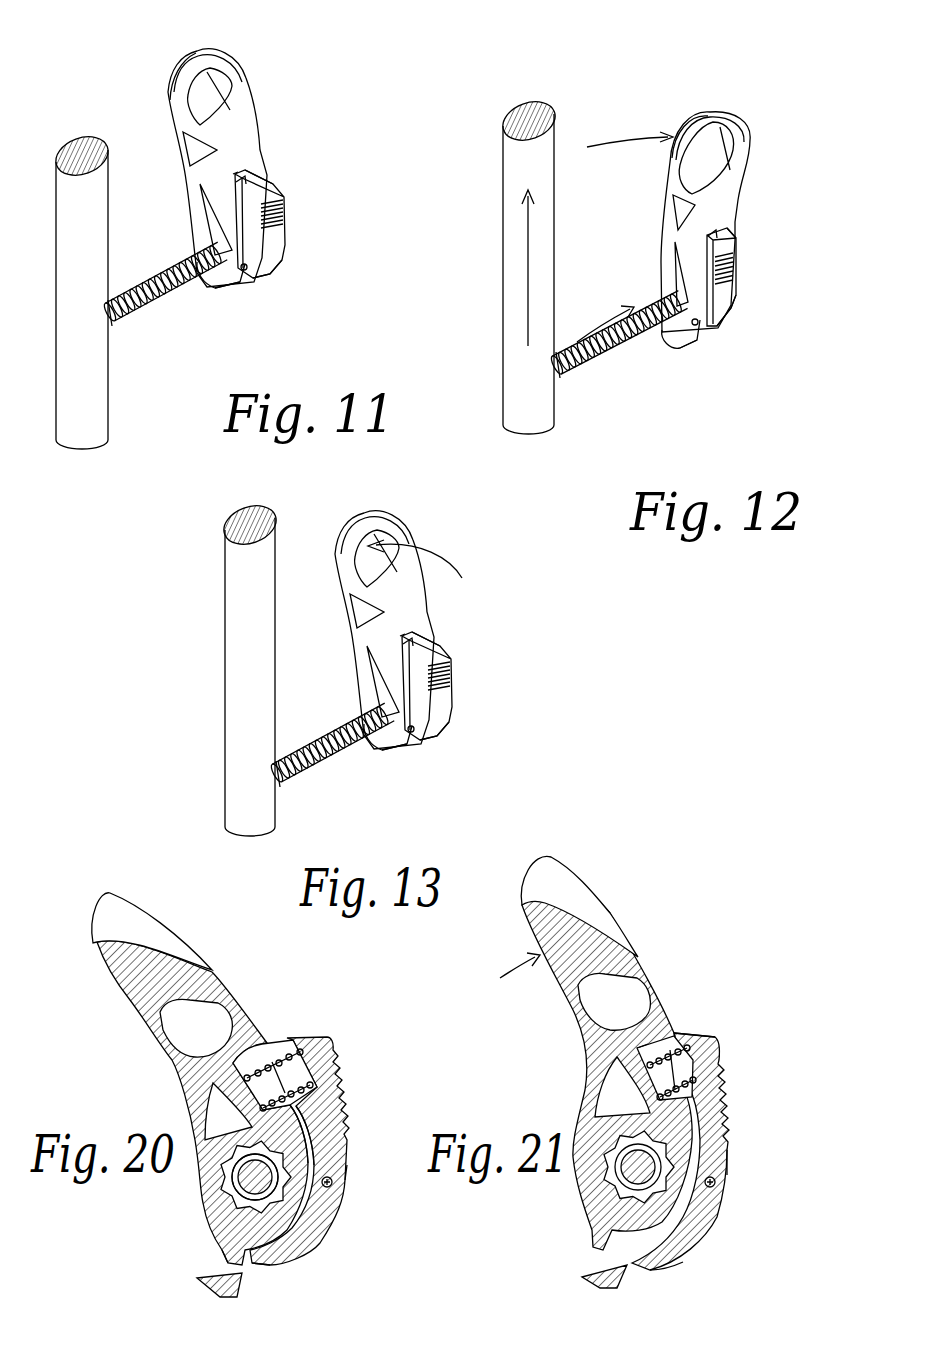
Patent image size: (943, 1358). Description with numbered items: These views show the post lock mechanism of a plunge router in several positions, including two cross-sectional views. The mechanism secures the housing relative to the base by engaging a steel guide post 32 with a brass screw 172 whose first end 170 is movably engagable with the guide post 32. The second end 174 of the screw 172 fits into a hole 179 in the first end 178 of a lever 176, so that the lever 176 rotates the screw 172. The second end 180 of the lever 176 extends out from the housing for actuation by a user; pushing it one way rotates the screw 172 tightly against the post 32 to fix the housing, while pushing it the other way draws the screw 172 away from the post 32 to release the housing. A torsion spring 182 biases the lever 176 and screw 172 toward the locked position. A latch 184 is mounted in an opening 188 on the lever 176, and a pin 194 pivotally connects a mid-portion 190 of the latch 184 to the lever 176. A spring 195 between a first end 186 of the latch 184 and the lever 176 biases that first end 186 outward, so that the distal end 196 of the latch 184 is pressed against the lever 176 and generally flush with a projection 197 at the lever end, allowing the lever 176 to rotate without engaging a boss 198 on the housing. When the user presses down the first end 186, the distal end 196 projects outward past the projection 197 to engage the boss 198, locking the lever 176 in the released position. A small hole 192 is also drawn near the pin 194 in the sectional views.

In FIG. 11, the guide post 32 is at (89, 142).
In FIG. 12, the guide post 32 is at (530, 114).
In FIG. 13, the guide post 32 is at (256, 520).
In FIG. 11, the first end of screw 170 is at (116, 325).
In FIG. 12, the first end of screw 170 is at (572, 380).
In FIG. 13, the first end of screw 170 is at (284, 790).
In FIG. 11, the screw 172 is at (160, 272).
In FIG. 12, the screw 172 is at (645, 300).
In FIG. 13, the screw 172 is at (328, 736).
In FIG. 20, the screw 172 is at (318, 1220).
In FIG. 11, the second end of screw 174 is at (228, 278).
In FIG. 12, the second end of screw 174 is at (688, 345).
In FIG. 13, the second end of screw 174 is at (395, 741).
In FIG. 20, the second end of screw 174 is at (312, 1192).
In FIG. 11, the lever 176 is at (240, 132).
In FIG. 12, the lever 176 is at (735, 170).
In FIG. 13, the lever 176 is at (405, 596).
In FIG. 20, the lever 176 is at (214, 983).
In FIG. 21, the lever 176 is at (607, 1054).
In FIG. 11, the first end of lever 178 is at (214, 288).
In FIG. 12, the first end of lever 178 is at (675, 348).
In FIG. 13, the first end of lever 178 is at (381, 750).
In FIG. 20, the hole 179 is at (232, 1206).
In FIG. 11, the second end of lever 180 is at (187, 56).
In FIG. 12, the second end of lever 180 is at (703, 112).
In FIG. 20, the second end of lever 180 is at (130, 906).
In FIG. 21, the second end of lever 180 is at (563, 880).
In FIG. 20, the torsion spring 182 is at (248, 1181).
In FIG. 21, the torsion spring 182 is at (639, 1167).
In FIG. 11, the latch 184 is at (287, 205).
In FIG. 12, the latch 184 is at (738, 250).
In FIG. 13, the latch 184 is at (454, 666).
In FIG. 20, the latch 184 is at (340, 1043).
In FIG. 21, the latch 184 is at (724, 1058).
In FIG. 11, the first end of latch 186 is at (280, 190).
In FIG. 12, the first end of latch 186 is at (737, 237).
In FIG. 13, the first end of latch 186 is at (448, 650).
In FIG. 21, the first end of latch 186 is at (707, 1035).
In FIG. 11, the opening 188 is at (250, 180).
In FIG. 12, the opening 188 is at (728, 232).
In FIG. 13, the opening 188 is at (418, 640).
In FIG. 21, the opening 188 is at (660, 1040).
In FIG. 11, the mid-portion of latch 190 is at (276, 275).
In FIG. 12, the mid-portion of latch 190 is at (735, 322).
In FIG. 13, the mid-portion of latch 190 is at (443, 738).
In FIG. 21, the mid-portion of latch 190 is at (652, 1270).
In FIG. 20, the pin hole 192 is at (332, 1180).
In FIG. 21, the pin hole 192 is at (715, 1180).
In FIG. 11, the pin 194 is at (246, 271).
In FIG. 12, the pin 194 is at (698, 327).
In FIG. 13, the pin 194 is at (413, 733).
In FIG. 20, the pin 194 is at (347, 1195).
In FIG. 21, the pin 194 is at (731, 1190).
In FIG. 11, the spring 195 is at (236, 174).
In FIG. 13, the spring 195 is at (403, 636).
In FIG. 20, the spring 195 is at (277, 1040).
In FIG. 21, the spring 195 is at (686, 1033).
In FIG. 20, the distal end of latch 196 is at (292, 1264).
In FIG. 20, the projection 197 is at (216, 1250).
In FIG. 20, the boss 198 is at (246, 1282).
In FIG. 21, the boss 198 is at (582, 1279).